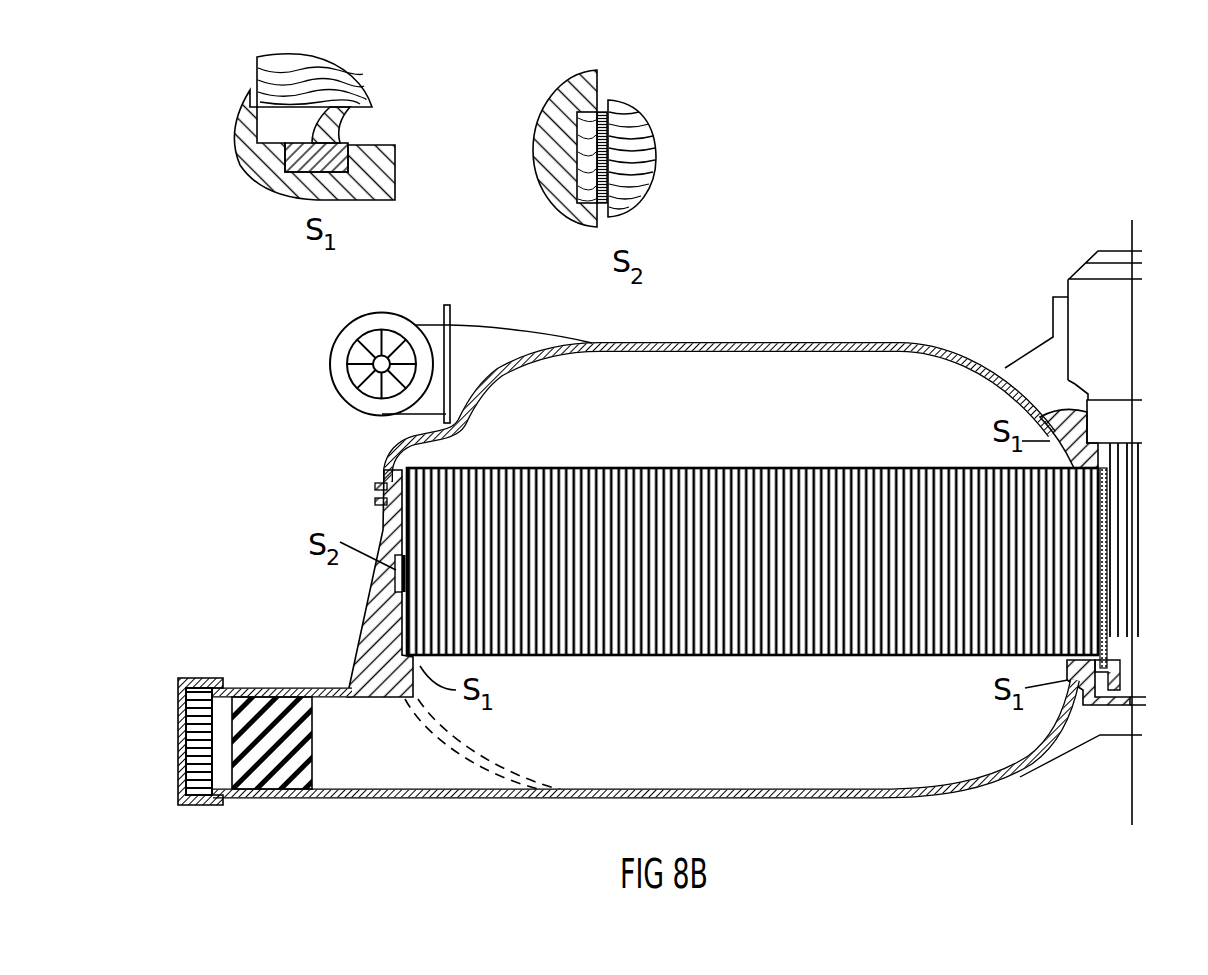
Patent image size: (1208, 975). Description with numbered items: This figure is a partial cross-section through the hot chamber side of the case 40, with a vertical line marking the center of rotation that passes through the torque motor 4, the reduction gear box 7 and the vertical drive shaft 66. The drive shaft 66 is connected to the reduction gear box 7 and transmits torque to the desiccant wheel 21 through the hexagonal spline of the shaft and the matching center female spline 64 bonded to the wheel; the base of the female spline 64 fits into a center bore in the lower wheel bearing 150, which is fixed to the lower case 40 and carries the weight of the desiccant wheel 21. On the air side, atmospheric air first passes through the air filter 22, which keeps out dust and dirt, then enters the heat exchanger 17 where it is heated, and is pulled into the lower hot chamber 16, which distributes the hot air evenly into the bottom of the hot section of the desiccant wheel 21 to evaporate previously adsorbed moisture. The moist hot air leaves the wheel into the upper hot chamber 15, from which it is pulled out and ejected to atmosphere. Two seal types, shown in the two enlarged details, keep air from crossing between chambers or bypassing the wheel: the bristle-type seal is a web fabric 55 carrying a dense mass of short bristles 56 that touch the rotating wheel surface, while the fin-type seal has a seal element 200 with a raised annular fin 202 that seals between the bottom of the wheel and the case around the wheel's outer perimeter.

The torque motor 4 is at (1084, 270).
The reduction gear box 7 is at (1120, 397).
The upper hot chamber 15 is at (668, 362).
The lower hot chamber 16 is at (695, 765).
The heat exchanger 17 is at (275, 710).
The desiccant wheel 21 is at (680, 470).
The air filter 22 is at (200, 700).
The case 40 is at (812, 343).
The web fabric 55 is at (586, 192).
The short bristles 56 is at (606, 110).
The female spline 64 is at (1105, 648).
The drive shaft 66 is at (1130, 487).
The lower wheel bearing 150 is at (1117, 669).
The seal element 200 is at (290, 154).
The raised annular fin 202 is at (333, 121).